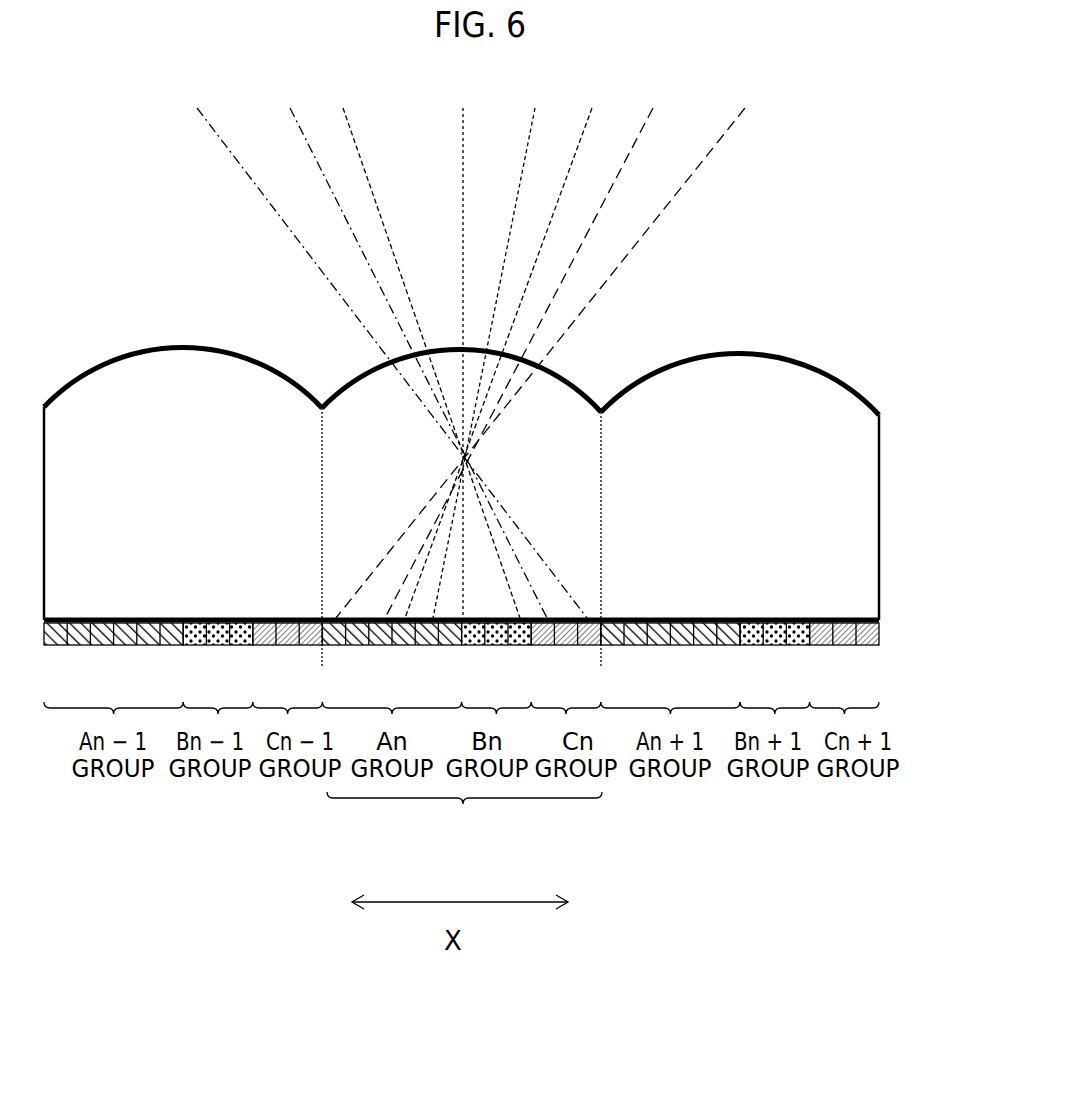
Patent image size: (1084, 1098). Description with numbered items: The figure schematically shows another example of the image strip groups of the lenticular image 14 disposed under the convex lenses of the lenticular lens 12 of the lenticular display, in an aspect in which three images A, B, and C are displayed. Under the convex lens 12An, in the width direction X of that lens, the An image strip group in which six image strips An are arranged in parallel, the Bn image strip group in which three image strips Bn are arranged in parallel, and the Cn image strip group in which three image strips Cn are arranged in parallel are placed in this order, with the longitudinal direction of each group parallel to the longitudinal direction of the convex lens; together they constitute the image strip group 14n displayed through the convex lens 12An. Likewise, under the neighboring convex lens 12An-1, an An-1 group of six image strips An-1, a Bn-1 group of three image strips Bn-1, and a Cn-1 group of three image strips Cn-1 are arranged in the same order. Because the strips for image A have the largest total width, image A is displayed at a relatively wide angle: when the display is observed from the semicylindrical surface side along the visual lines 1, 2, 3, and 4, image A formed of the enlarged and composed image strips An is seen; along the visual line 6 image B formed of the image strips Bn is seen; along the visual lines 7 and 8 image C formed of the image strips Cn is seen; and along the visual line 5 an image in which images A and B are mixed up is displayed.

The visual line 1 is at (547, 348).
The visual line 2 is at (525, 348).
The visual line 3 is at (502, 348).
The visual line 4 is at (487, 348).
The visual line 5 is at (461, 348).
The visual line 6 is at (427, 348).
The visual line 7 is at (414, 348).
The visual line 8 is at (385, 348).
The lenticular lens 12 is at (506, 481).
The convex lens 12An-1 is at (178, 345).
The convex lens 12An is at (567, 377).
The lenticular image 14 is at (506, 655).
The image strip group 14n is at (461, 835).
The image strips An-1 is at (108, 647).
The image strips Bn-1 is at (215, 647).
The image strips Cn-1 is at (290, 647).
The image strips An is at (385, 647).
The image strips Bn is at (495, 647).
The image strips Cn is at (570, 647).